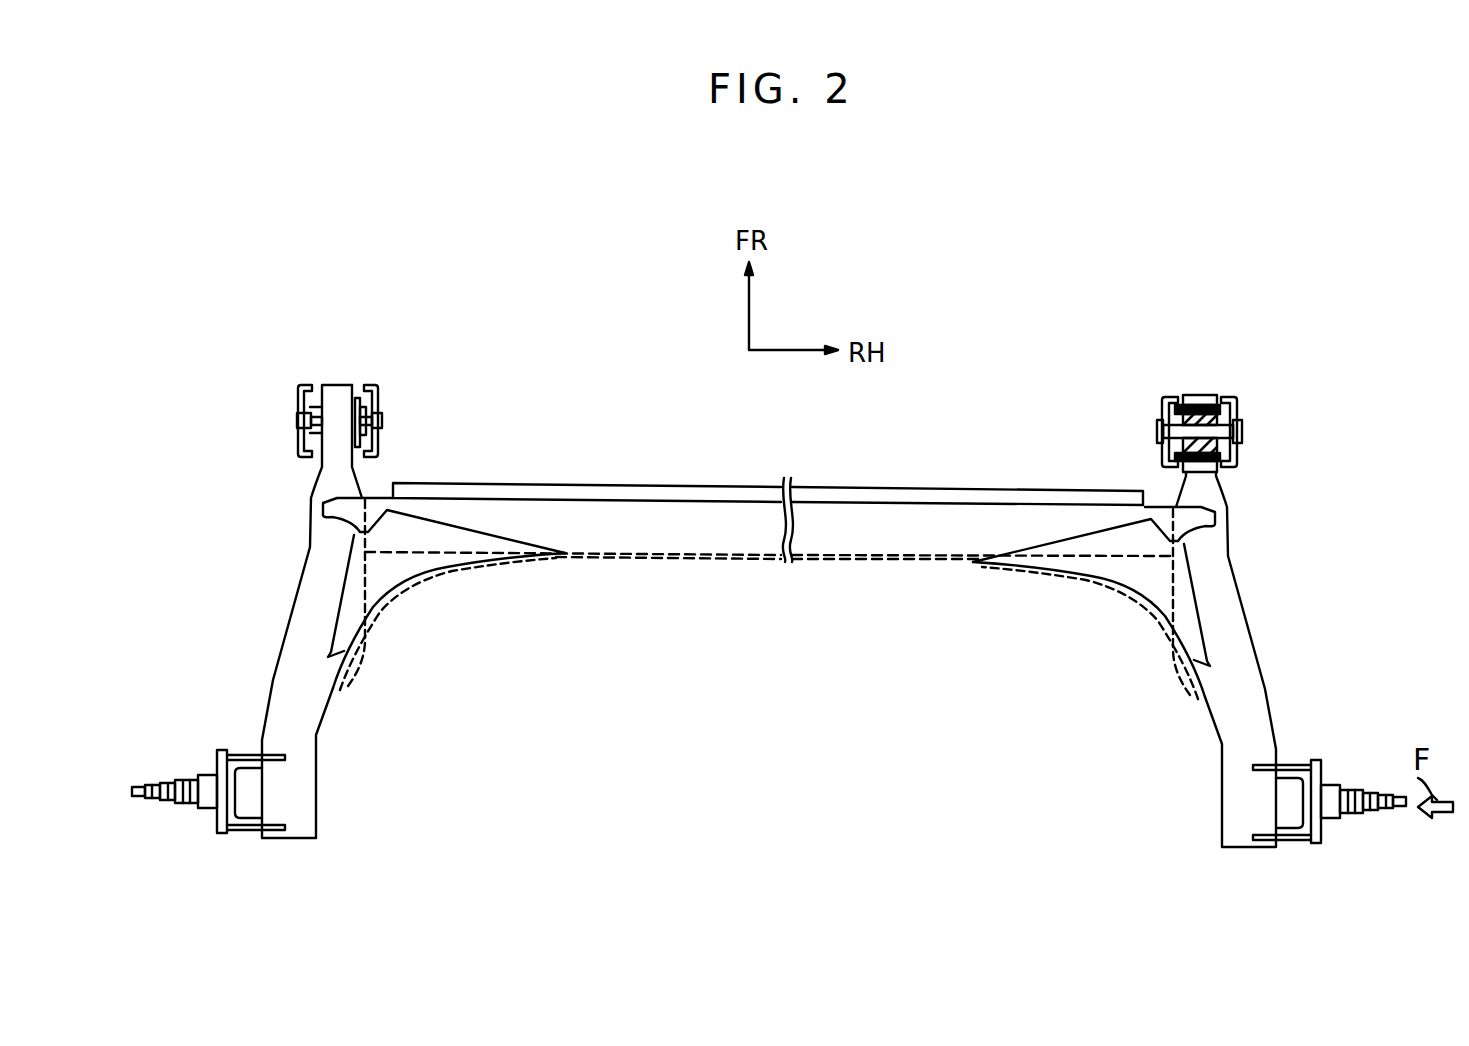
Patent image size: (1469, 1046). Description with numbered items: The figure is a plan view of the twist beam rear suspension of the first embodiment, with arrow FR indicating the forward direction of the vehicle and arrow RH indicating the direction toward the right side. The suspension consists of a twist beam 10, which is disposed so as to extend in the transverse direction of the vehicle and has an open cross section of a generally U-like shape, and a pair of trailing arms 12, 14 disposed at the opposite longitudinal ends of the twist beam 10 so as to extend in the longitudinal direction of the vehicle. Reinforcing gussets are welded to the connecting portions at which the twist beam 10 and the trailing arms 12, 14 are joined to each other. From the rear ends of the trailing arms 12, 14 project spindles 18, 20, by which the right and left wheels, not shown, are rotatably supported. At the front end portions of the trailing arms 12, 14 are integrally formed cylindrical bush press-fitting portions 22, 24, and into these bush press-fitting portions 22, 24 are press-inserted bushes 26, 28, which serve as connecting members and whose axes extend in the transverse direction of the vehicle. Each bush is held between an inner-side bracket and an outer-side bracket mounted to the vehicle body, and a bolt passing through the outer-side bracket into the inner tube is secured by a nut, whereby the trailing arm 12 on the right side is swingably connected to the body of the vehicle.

The twist beam 10 is at (948, 488).
The trailing arm 12 is at (1238, 614).
The trailing arm 14 is at (287, 652).
The spindle 18 is at (1383, 813).
The spindle 20 is at (170, 780).
The bush press-fitting portion 22 is at (1213, 398).
The bush press-fitting portion 24 is at (353, 385).
The bush 26 is at (1177, 393).
The bush 28 is at (317, 384).